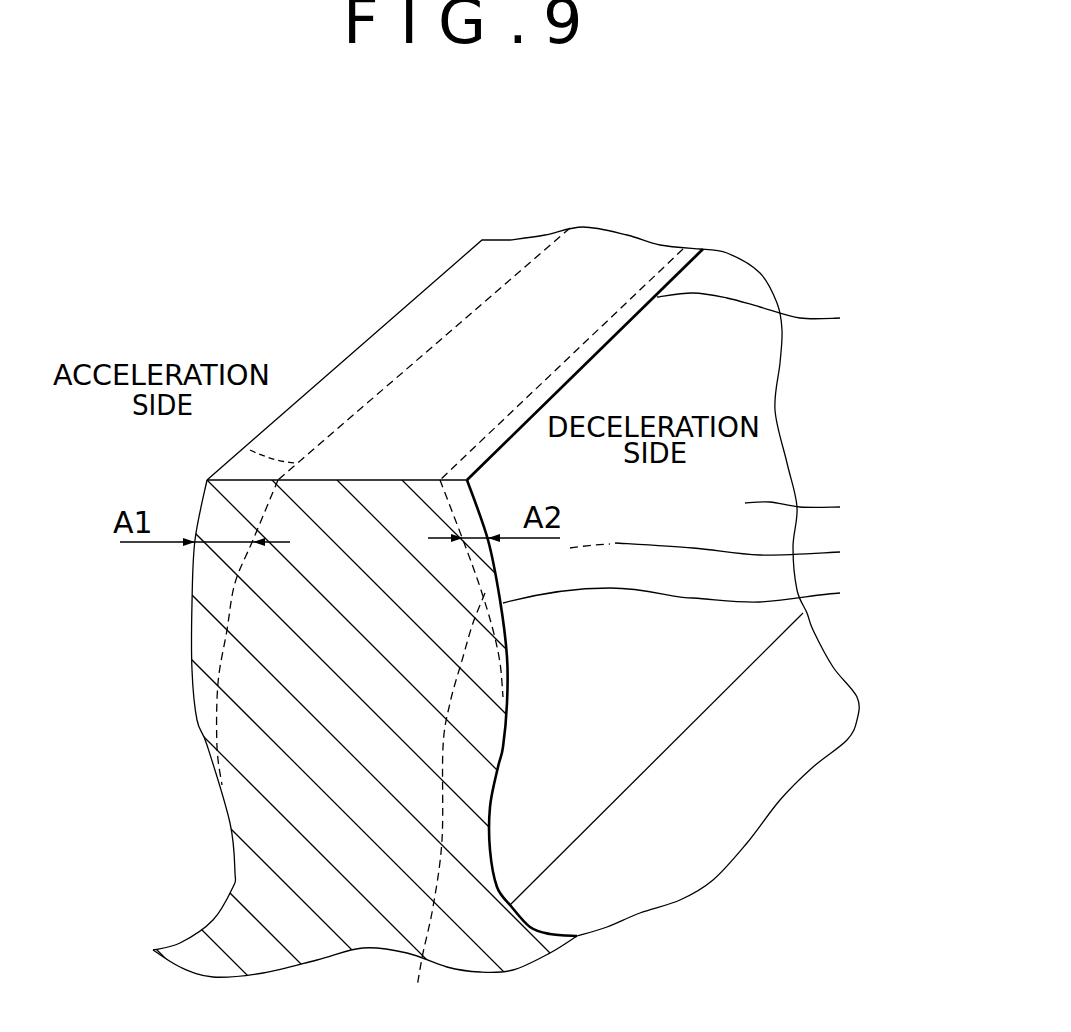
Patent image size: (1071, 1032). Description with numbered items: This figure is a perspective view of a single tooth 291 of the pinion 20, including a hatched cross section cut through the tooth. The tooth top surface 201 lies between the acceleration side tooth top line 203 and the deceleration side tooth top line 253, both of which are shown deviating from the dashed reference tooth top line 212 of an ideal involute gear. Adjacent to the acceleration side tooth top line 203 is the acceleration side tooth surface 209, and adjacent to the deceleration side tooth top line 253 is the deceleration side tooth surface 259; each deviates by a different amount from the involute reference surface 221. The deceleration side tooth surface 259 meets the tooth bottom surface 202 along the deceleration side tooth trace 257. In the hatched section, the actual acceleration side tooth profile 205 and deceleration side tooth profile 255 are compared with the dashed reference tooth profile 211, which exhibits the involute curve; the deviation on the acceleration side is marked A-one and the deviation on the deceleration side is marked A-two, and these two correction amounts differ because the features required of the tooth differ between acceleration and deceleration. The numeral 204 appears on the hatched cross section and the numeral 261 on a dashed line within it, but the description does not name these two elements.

The pinion 20 is at (415, 240).
The tooth top surface 201 is at (603, 260).
The tooth bottom surface 202 is at (660, 863).
The acceleration side tooth top line 203 is at (393, 318).
The tooth cross section 204 is at (310, 783).
The acceleration side tooth profile 205 is at (190, 622).
The acceleration side tooth surface 209 is at (358, 387).
The reference tooth profile 211 is at (233, 583).
The reference tooth top line 212 is at (522, 268).
The reference surface 221 is at (250, 450).
The deceleration side tooth top line 253 is at (778, 314).
The deceleration side tooth profile 255 is at (701, 592).
The deceleration side tooth trace 257 is at (657, 765).
The deceleration side tooth surface 259 is at (822, 504).
The tooth center line 261 is at (439, 811).
The tooth 291 is at (705, 228).